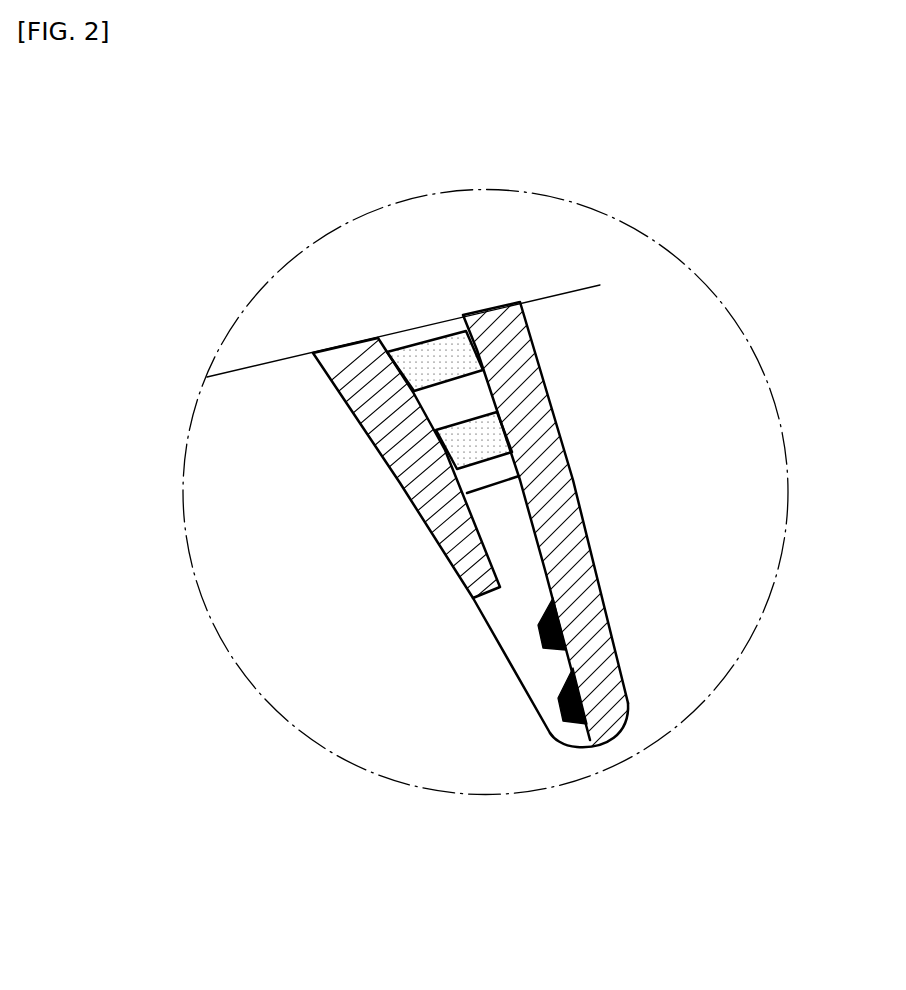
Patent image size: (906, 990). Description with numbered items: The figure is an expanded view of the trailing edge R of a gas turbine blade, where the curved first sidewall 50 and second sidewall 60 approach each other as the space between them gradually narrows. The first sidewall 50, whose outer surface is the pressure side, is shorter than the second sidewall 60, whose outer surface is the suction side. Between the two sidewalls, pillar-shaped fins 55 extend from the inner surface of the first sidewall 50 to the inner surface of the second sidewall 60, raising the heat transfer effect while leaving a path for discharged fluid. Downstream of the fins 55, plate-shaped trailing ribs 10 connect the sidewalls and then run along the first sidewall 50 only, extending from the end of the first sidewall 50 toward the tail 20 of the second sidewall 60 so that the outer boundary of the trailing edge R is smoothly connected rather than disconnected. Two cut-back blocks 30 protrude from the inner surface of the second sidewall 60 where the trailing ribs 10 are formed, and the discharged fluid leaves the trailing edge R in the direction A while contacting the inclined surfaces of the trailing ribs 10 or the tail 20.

The trailing edge R is at (477, 455).
The trailing ribs 10 is at (512, 622).
The tail 20 is at (608, 707).
The cut-back blocks 30 is at (572, 722).
The first sidewall 50 is at (425, 475).
The pillar-shaped fins 55 is at (487, 412).
The second sidewall 60 is at (558, 478).
The direction A is at (457, 772).